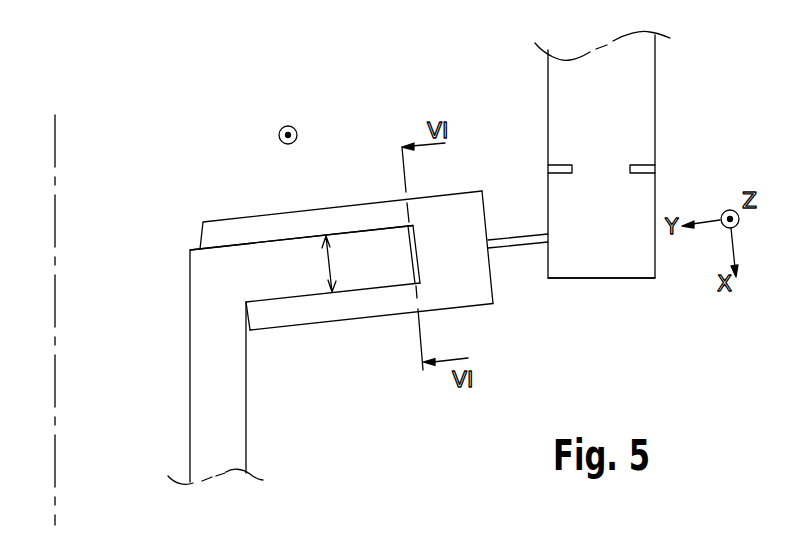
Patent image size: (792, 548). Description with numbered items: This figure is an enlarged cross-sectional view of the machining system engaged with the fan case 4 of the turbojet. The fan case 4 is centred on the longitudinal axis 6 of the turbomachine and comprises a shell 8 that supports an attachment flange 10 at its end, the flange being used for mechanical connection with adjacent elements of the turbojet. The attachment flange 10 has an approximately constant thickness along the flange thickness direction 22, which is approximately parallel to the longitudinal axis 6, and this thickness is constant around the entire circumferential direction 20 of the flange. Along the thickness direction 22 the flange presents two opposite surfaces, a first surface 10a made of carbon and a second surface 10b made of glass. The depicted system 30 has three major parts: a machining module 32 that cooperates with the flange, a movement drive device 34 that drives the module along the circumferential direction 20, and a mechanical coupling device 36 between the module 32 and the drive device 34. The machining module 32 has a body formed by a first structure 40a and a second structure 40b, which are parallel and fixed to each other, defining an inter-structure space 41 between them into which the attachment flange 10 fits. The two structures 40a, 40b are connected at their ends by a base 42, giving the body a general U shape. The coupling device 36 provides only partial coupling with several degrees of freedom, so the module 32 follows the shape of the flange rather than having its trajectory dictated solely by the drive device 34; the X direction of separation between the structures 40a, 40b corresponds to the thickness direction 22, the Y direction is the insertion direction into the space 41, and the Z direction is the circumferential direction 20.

The fan case 4 is at (170, 382).
The longitudinal axis 6 is at (55, 153).
The shell 8 is at (215, 445).
The attachment flange 10 is at (263, 268).
The first surface 10a is at (308, 297).
The second surface 10b is at (284, 237).
The circumferential direction 20 is at (281, 129).
The flange thickness direction 22 is at (331, 268).
The actuator housing 30 is at (524, 109).
The machining module 32 is at (346, 184).
The movement drive device 34 is at (578, 278).
The mechanical coupling device 36 is at (508, 249).
The first structure 40a is at (268, 313).
The second structure 40b is at (252, 228).
The inter-structure space 41 is at (418, 250).
The base 42 is at (450, 248).